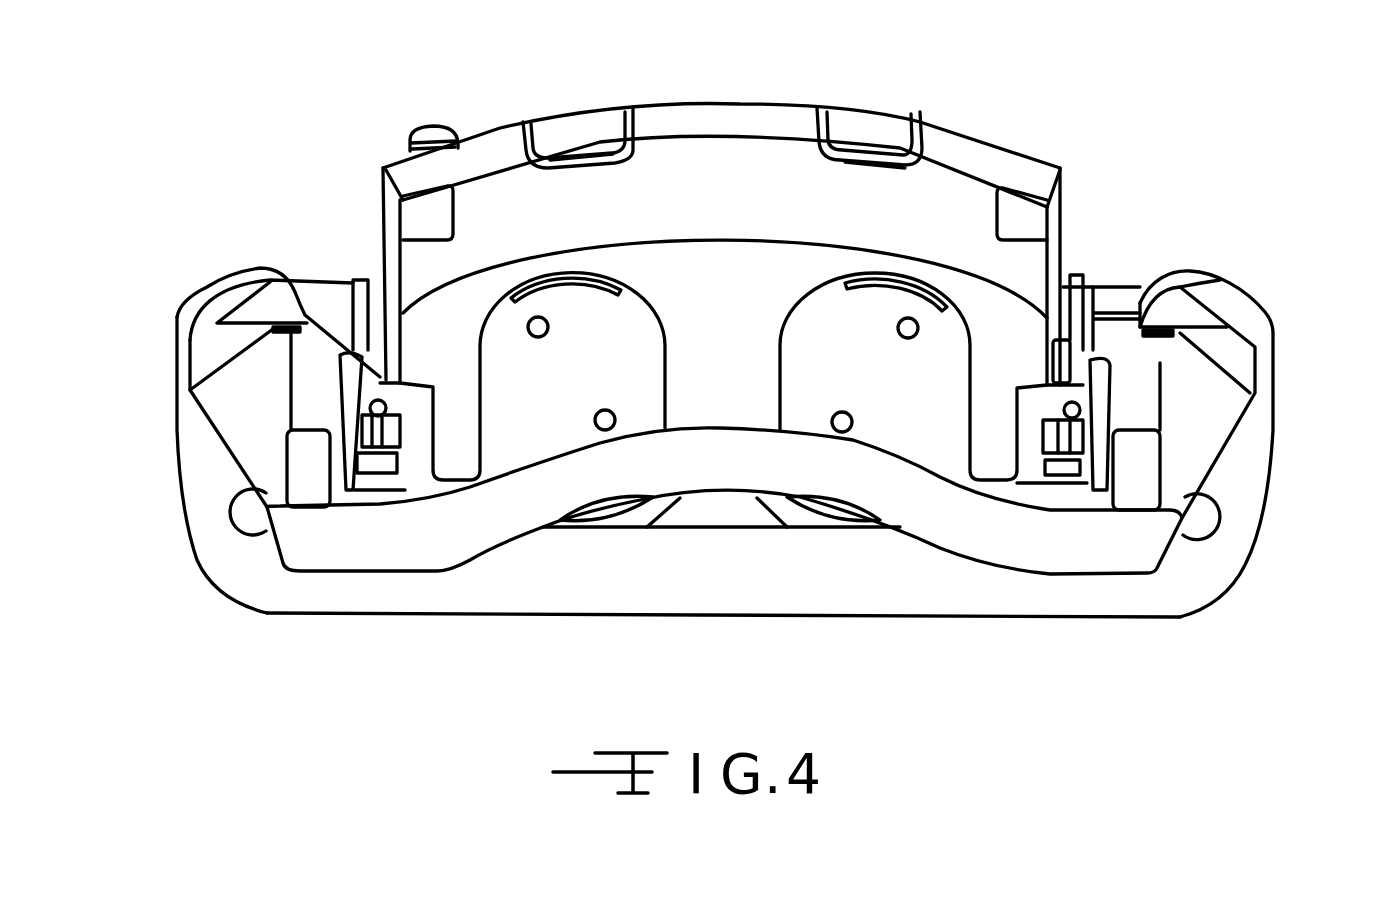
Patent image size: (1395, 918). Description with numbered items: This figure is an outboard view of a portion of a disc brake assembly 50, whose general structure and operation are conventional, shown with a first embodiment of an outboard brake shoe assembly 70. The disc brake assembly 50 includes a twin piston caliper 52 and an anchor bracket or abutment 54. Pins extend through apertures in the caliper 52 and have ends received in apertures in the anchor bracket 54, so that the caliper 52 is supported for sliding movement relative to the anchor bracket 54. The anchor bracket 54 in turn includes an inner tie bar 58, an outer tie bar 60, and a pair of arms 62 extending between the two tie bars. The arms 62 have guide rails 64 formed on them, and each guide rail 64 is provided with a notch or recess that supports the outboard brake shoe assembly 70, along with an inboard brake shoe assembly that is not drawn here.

The disc brake assembly 50 is at (1167, 160).
The twin piston caliper 52 is at (1013, 140).
The anchor bracket 54 is at (1270, 507).
The inner tie bar 58 is at (1050, 600).
The outer tie bar 60 is at (1113, 545).
The arms 62 is at (177, 340).
The guide rails 64 is at (303, 368).
The outboard brake shoe assembly 70 is at (393, 493).